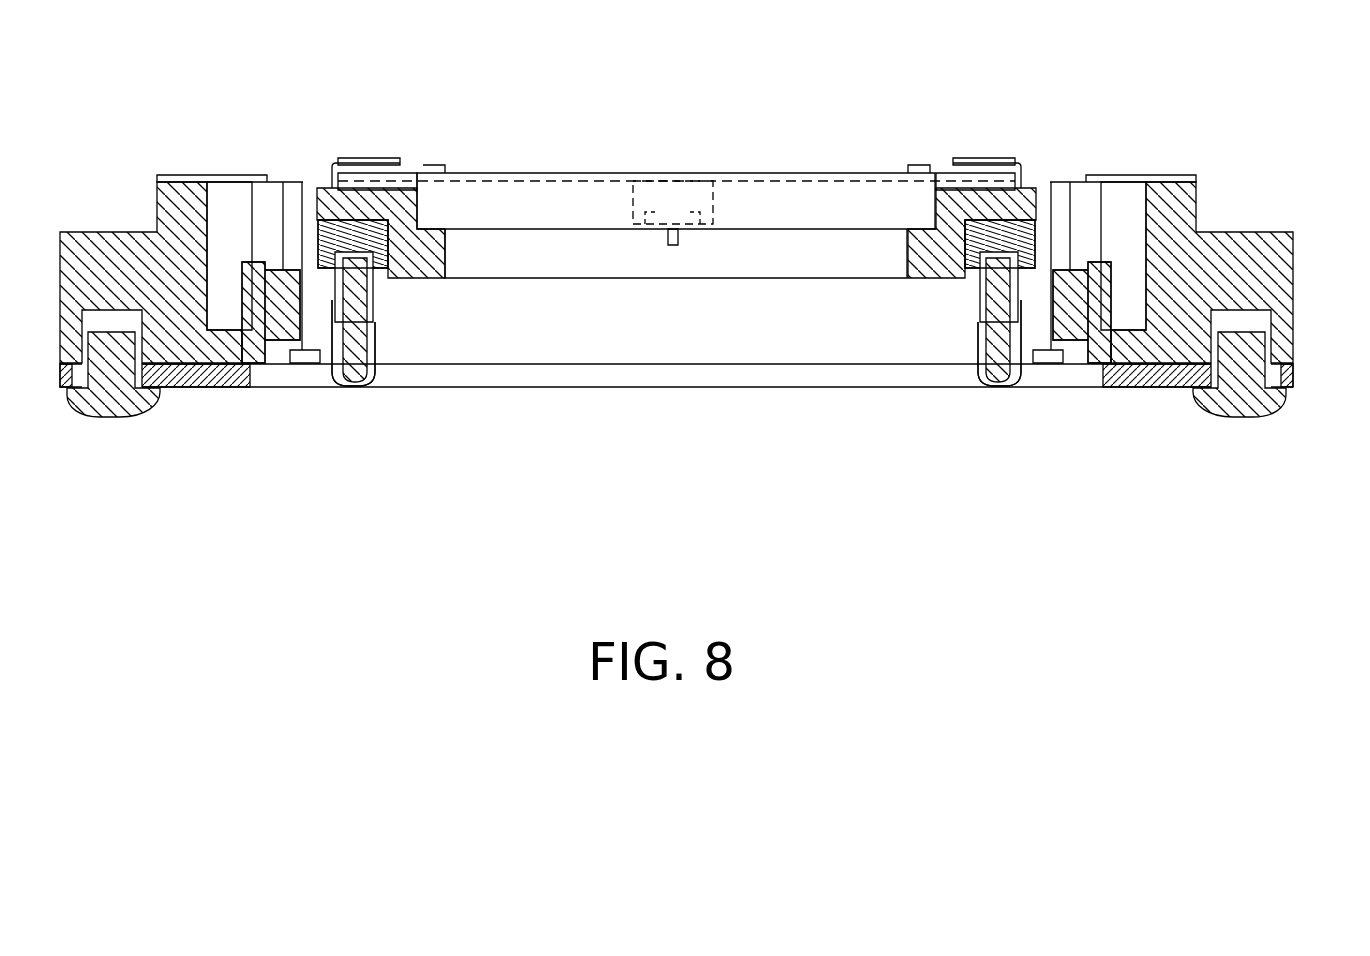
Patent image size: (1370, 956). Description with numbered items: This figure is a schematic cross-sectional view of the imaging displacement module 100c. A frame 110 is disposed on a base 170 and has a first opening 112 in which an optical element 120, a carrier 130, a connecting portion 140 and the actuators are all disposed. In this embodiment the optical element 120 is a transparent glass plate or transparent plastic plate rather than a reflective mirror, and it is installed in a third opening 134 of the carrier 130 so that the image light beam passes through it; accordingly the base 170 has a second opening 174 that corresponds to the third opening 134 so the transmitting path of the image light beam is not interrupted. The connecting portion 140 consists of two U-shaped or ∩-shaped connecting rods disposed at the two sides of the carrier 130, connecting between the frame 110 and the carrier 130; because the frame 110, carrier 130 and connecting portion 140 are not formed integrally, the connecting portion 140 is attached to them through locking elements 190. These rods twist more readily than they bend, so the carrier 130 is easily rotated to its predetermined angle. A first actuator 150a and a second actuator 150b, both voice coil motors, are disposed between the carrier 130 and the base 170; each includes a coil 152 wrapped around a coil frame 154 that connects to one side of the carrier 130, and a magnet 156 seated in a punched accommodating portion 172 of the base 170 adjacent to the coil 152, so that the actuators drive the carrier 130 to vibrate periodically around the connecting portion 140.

The imaging displacement module 100c is at (1358, 575).
The frame 110 is at (1252, 258).
The first opening 112 is at (1135, 221).
The optical element 120 is at (798, 172).
The carrier 130 is at (1015, 200).
The third opening 134 is at (780, 291).
The connecting portion 140 is at (735, 198).
The first actuator 150a is at (1122, 513).
The second actuator 150b is at (393, 513).
The coil 152 is at (328, 305).
The coil frame 154 is at (380, 263).
The magnet 156 is at (283, 312).
The base 170 is at (182, 388).
The accommodating portion 172 is at (252, 367).
The second opening 174 is at (888, 397).
The locking element 190 is at (680, 198).